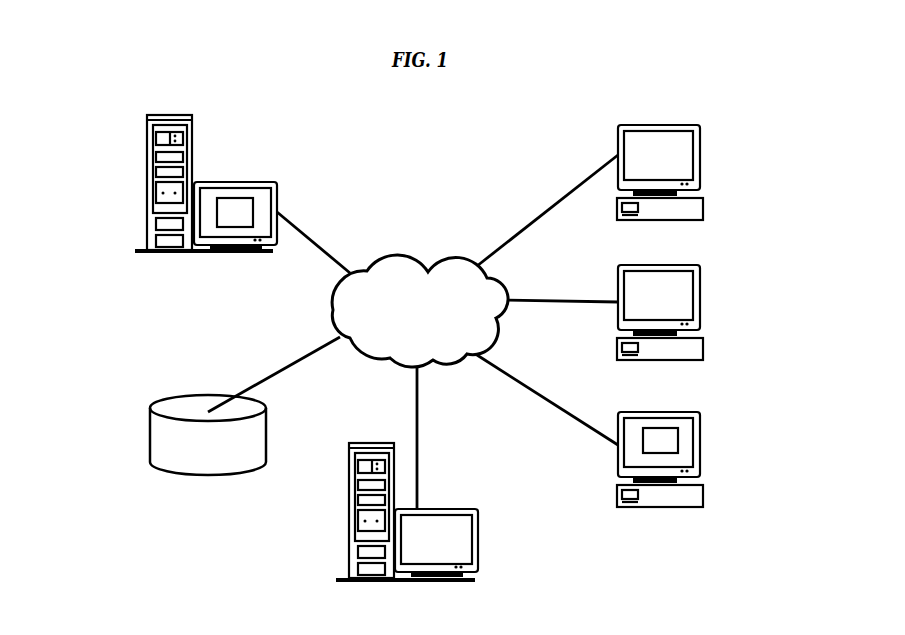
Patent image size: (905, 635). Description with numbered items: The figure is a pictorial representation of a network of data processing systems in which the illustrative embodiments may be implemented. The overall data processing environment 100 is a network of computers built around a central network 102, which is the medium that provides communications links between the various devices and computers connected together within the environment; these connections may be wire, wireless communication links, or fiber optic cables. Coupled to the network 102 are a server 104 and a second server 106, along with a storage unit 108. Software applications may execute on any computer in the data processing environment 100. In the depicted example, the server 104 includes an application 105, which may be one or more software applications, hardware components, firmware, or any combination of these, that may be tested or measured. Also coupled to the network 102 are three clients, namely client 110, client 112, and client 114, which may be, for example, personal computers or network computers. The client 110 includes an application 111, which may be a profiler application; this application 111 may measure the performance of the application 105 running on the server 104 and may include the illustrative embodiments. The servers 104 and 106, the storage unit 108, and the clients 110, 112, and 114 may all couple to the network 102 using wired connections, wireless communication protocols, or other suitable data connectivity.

The data processing environment 100 is at (102, 140).
The network 102 is at (430, 328).
The server 104 is at (249, 276).
The application 105 is at (297, 158).
The server 106 is at (450, 600).
The storage unit 108 is at (220, 466).
The client 110 is at (698, 524).
The application 111 is at (762, 420).
The client 112 is at (700, 380).
The client 114 is at (700, 238).